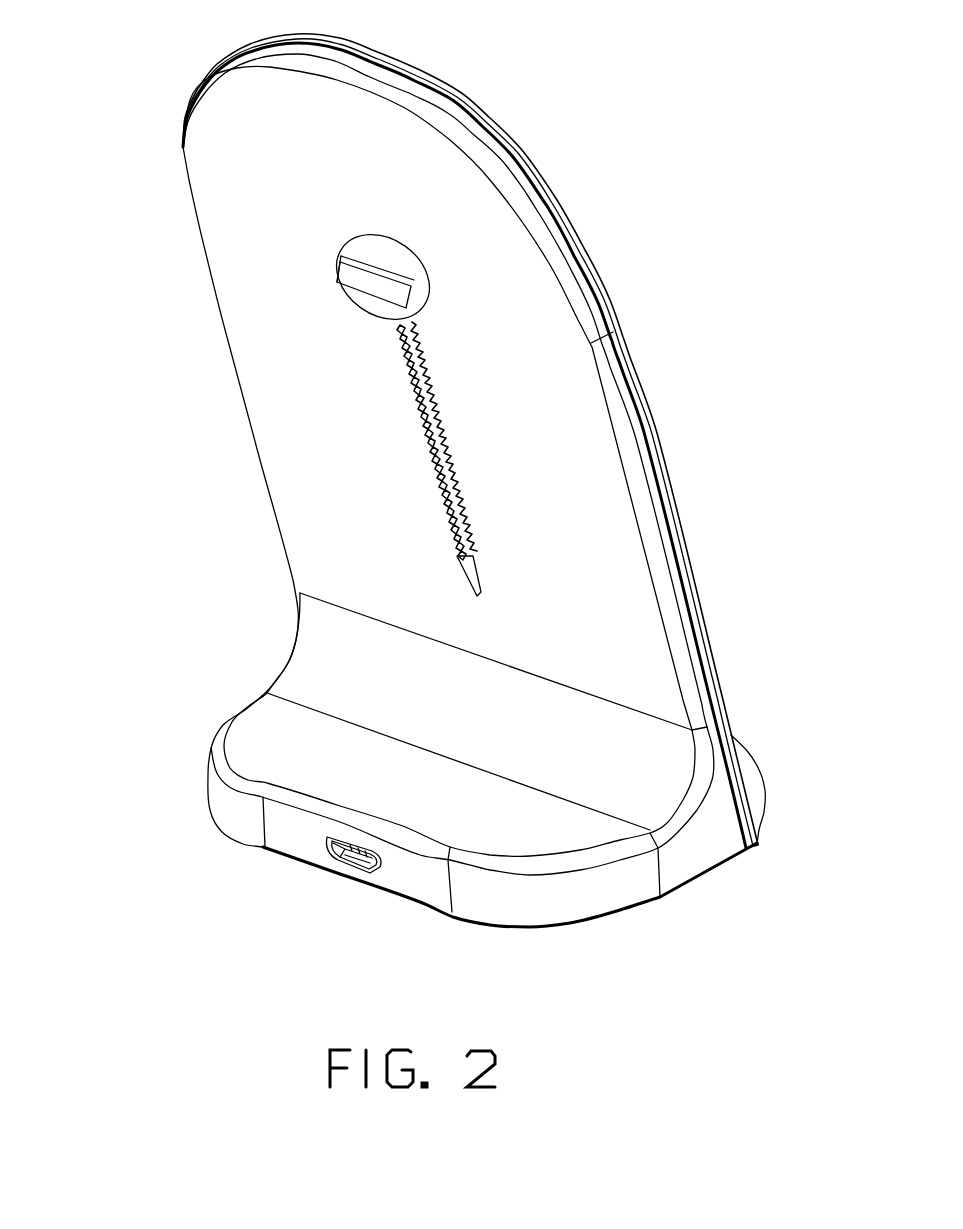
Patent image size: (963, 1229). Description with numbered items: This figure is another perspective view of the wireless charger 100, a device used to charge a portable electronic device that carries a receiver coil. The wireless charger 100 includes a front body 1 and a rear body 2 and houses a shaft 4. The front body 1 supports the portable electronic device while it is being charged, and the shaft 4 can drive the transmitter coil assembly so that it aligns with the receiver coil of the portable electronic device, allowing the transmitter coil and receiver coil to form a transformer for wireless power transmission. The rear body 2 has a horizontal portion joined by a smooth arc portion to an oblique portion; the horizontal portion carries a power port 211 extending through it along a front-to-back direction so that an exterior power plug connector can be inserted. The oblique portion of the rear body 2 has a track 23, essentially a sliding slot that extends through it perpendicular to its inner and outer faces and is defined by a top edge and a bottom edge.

The wireless charger 100 is at (167, 92).
The front body 1 is at (645, 433).
The rear body 2 is at (293, 328).
The shaft 4 is at (373, 253).
The track 23 is at (420, 413).
The power port 211 is at (353, 863).